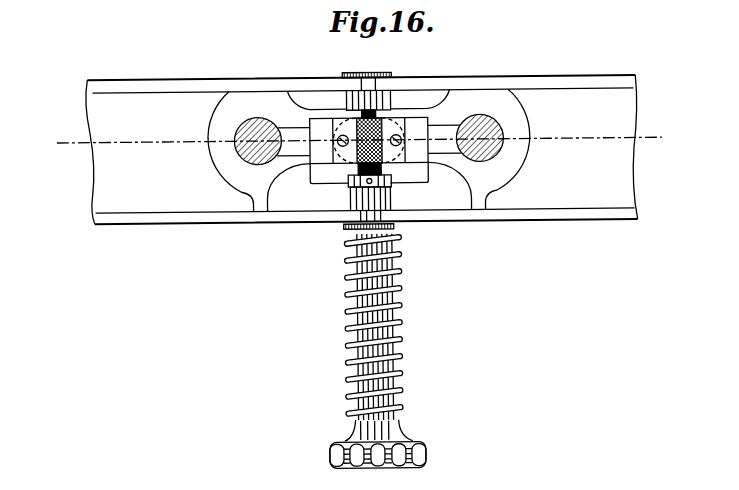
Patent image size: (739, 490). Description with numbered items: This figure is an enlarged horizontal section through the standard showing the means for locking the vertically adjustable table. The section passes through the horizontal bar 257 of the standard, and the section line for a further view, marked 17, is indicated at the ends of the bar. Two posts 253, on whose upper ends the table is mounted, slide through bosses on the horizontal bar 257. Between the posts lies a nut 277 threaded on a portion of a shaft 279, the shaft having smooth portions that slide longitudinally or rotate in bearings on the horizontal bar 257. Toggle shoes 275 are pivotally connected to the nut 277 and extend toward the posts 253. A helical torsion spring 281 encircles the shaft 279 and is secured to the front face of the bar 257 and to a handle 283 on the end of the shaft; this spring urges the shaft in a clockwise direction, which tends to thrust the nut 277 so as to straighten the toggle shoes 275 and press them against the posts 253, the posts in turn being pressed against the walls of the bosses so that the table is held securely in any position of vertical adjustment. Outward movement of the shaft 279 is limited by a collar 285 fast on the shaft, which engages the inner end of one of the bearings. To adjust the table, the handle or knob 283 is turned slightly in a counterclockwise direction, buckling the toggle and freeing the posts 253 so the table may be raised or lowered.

The section line 17- 17 is at (662, 124).
The posts 253 is at (236, 129).
The horizontal bar 257 is at (503, 212).
The toggle shoes 275 is at (287, 125).
The nut 277 is at (388, 161).
The shaft 279 is at (393, 103).
The helical torsion spring 281 is at (398, 274).
The handle 283 is at (425, 455).
The collar 285 is at (392, 178).